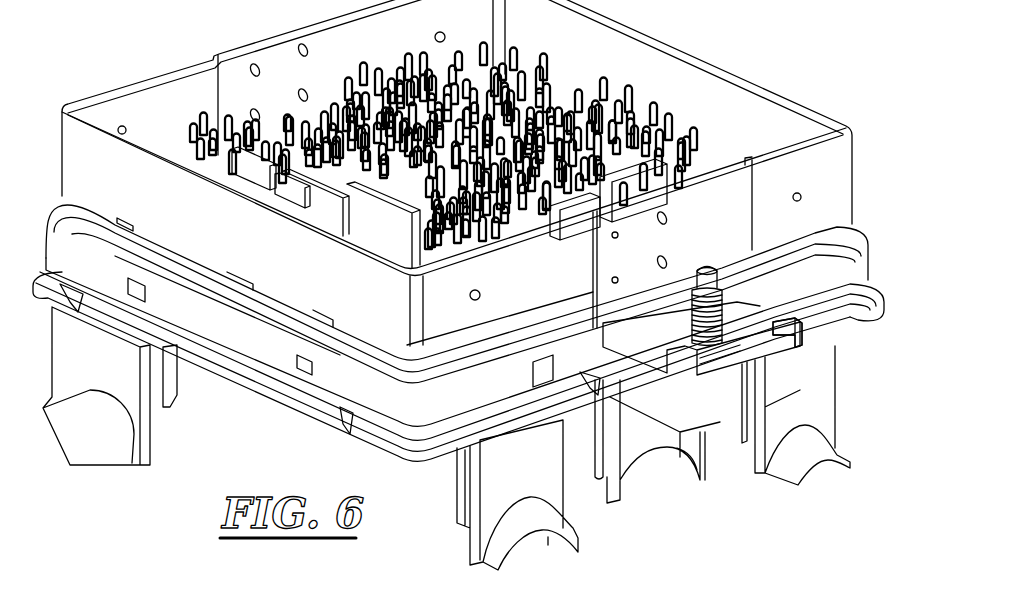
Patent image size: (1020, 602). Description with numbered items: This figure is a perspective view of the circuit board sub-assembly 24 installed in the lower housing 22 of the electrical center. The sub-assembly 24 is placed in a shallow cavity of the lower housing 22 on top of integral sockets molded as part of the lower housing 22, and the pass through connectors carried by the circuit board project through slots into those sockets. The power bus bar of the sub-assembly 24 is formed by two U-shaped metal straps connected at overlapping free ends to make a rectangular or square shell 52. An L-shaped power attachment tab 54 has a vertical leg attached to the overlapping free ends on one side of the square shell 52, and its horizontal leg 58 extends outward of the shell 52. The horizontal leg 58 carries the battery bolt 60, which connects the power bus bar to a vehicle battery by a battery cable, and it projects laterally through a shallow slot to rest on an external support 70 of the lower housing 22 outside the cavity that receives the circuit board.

The circuit board sub-assembly 24 is at (869, 118).
The square shell 52 is at (756, 82).
The lower housing 22 is at (860, 270).
The power attachment tab 54 is at (752, 330).
The horizontal leg 58 is at (752, 330).
The battery bolt 60 is at (697, 305).
The external support 70 is at (720, 407).